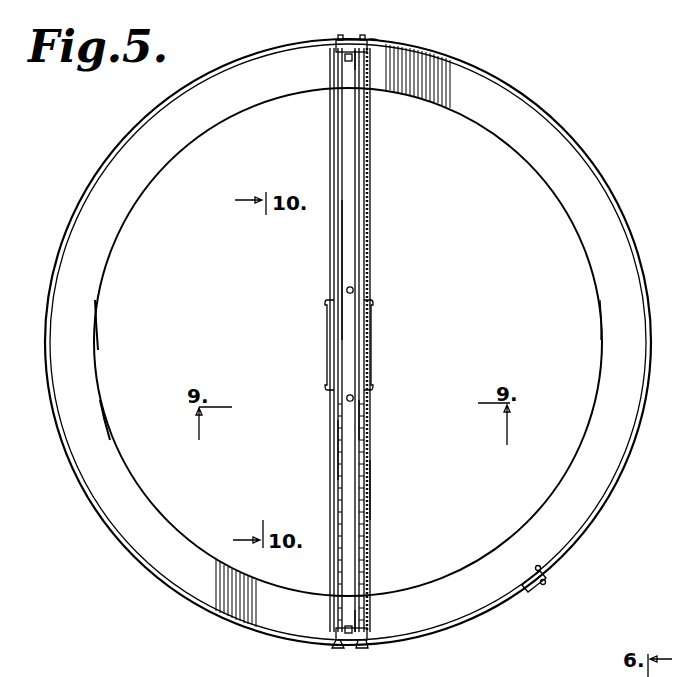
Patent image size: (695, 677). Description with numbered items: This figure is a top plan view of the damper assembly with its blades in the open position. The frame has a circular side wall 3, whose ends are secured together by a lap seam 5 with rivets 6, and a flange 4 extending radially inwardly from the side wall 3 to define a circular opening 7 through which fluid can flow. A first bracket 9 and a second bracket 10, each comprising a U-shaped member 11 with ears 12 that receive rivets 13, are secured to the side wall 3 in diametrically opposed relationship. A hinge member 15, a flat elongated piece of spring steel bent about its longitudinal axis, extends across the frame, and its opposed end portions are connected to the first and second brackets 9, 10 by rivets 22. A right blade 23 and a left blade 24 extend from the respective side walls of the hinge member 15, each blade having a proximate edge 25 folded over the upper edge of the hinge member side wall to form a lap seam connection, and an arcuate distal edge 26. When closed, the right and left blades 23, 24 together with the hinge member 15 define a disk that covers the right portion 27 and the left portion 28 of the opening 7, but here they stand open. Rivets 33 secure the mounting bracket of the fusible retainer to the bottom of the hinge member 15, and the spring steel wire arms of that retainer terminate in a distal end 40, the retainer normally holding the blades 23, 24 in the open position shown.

The side wall 3 is at (636, 408).
The flange 4 is at (95, 302).
The lap seam 5 is at (532, 586).
The rivets 6 is at (543, 585).
The circular opening 7 is at (518, 149).
The first bracket 9 is at (371, 42).
The second bracket 10 is at (366, 647).
The U-shaped member 11 is at (358, 60).
The ears 12 is at (340, 38).
The rivets 13 is at (340, 650).
The hinge member 15 is at (360, 425).
The rivets 22 is at (345, 58).
The right blade 23 is at (362, 220).
The left blade 24 is at (338, 450).
The proximate edge 25 is at (370, 490).
The distal edge 26 is at (340, 270).
The right portion 27 is at (598, 318).
The left portion 28 is at (108, 424).
The rivets 33 is at (346, 290).
The distal end 40 is at (366, 331).